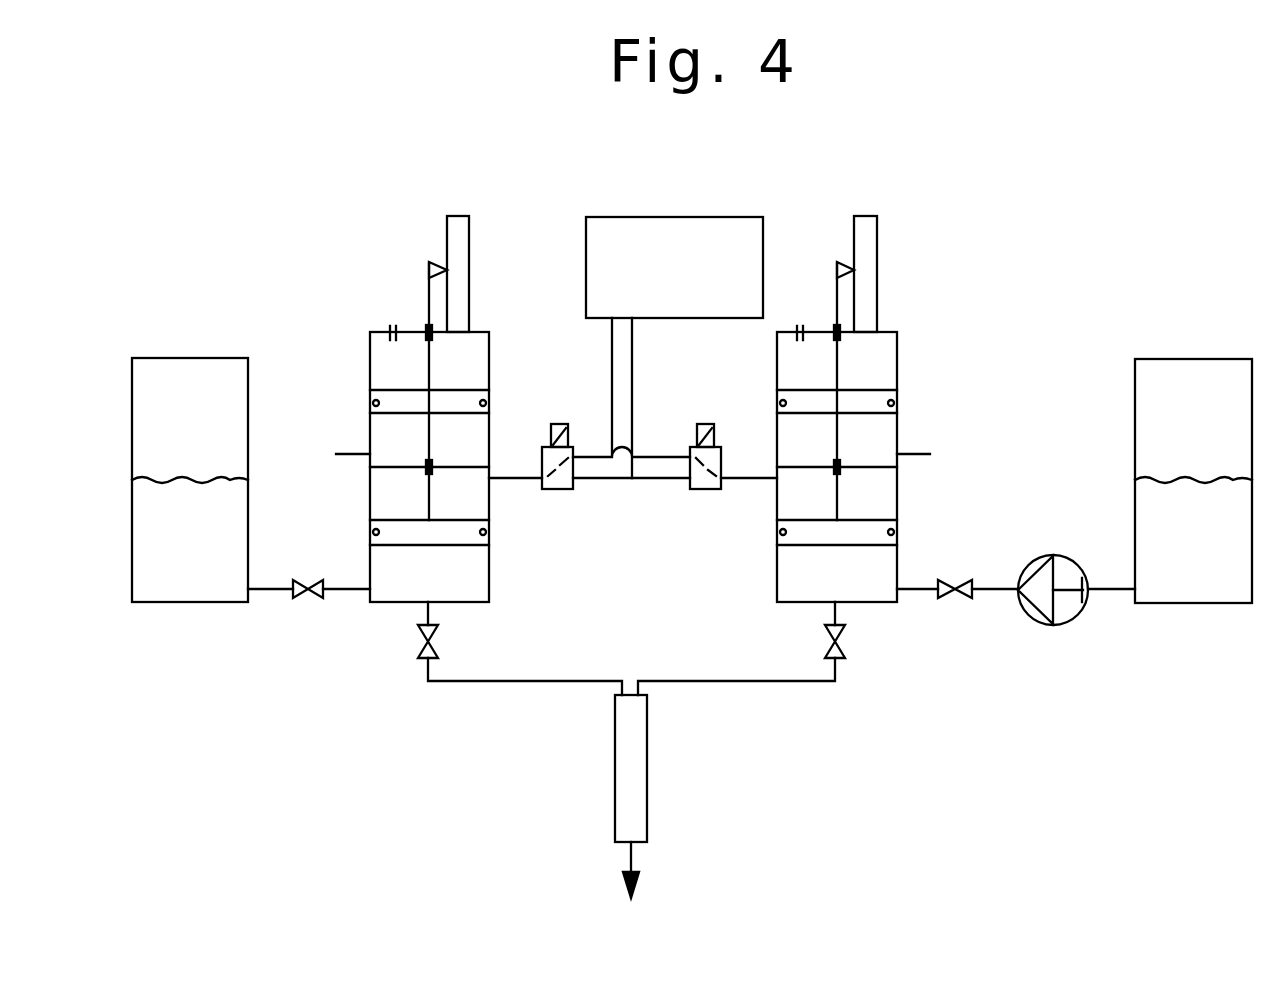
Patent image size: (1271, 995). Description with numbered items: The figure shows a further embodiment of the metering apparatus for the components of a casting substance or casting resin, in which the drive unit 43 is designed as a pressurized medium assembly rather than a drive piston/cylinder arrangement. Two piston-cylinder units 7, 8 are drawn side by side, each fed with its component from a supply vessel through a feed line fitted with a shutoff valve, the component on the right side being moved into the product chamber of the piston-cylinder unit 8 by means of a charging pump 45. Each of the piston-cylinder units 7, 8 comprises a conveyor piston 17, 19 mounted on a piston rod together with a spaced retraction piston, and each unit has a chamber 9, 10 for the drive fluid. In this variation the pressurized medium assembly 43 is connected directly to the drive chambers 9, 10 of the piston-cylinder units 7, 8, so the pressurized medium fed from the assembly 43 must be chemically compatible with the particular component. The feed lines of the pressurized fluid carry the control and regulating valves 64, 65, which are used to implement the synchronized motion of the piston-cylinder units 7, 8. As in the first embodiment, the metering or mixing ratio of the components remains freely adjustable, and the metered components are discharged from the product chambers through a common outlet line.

The piston-cylinder unit 7 is at (362, 329).
The piston-cylinder unit 8 is at (905, 328).
The chamber for the drive fluid 9 is at (446, 506).
The chamber for the drive fluid 10 is at (791, 506).
The conveyor piston 17 is at (375, 532).
The conveyor piston 19 is at (880, 532).
The drive unit 43 is at (659, 279).
The charging pump 45 is at (1062, 626).
The control and regulating valve 64 is at (560, 491).
The control and regulating valve 65 is at (705, 491).